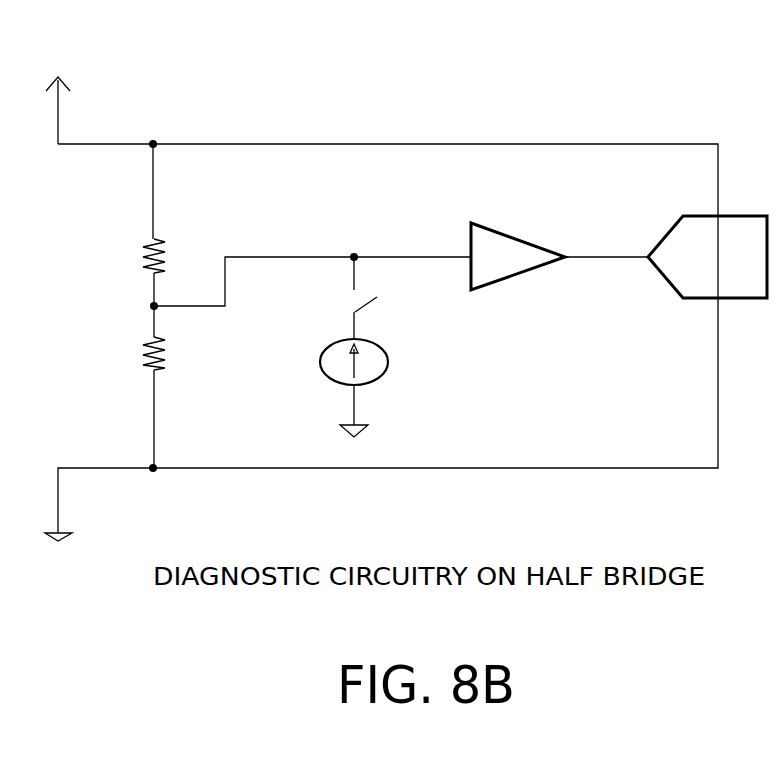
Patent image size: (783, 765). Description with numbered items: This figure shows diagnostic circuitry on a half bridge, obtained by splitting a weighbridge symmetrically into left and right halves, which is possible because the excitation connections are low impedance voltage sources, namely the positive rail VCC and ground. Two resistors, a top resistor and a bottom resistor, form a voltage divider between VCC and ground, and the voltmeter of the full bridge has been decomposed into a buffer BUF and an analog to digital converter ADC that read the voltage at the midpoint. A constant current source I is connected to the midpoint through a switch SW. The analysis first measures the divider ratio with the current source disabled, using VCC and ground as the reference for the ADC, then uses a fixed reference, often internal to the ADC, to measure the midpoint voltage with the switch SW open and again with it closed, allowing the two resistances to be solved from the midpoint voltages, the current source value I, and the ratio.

The excitation voltage VCC is at (57, 68).
The switch SW is at (337, 297).
The constant current source I is at (342, 388).
The buffer BUF is at (518, 256).
The analog to digital converter ADC is at (707, 257).